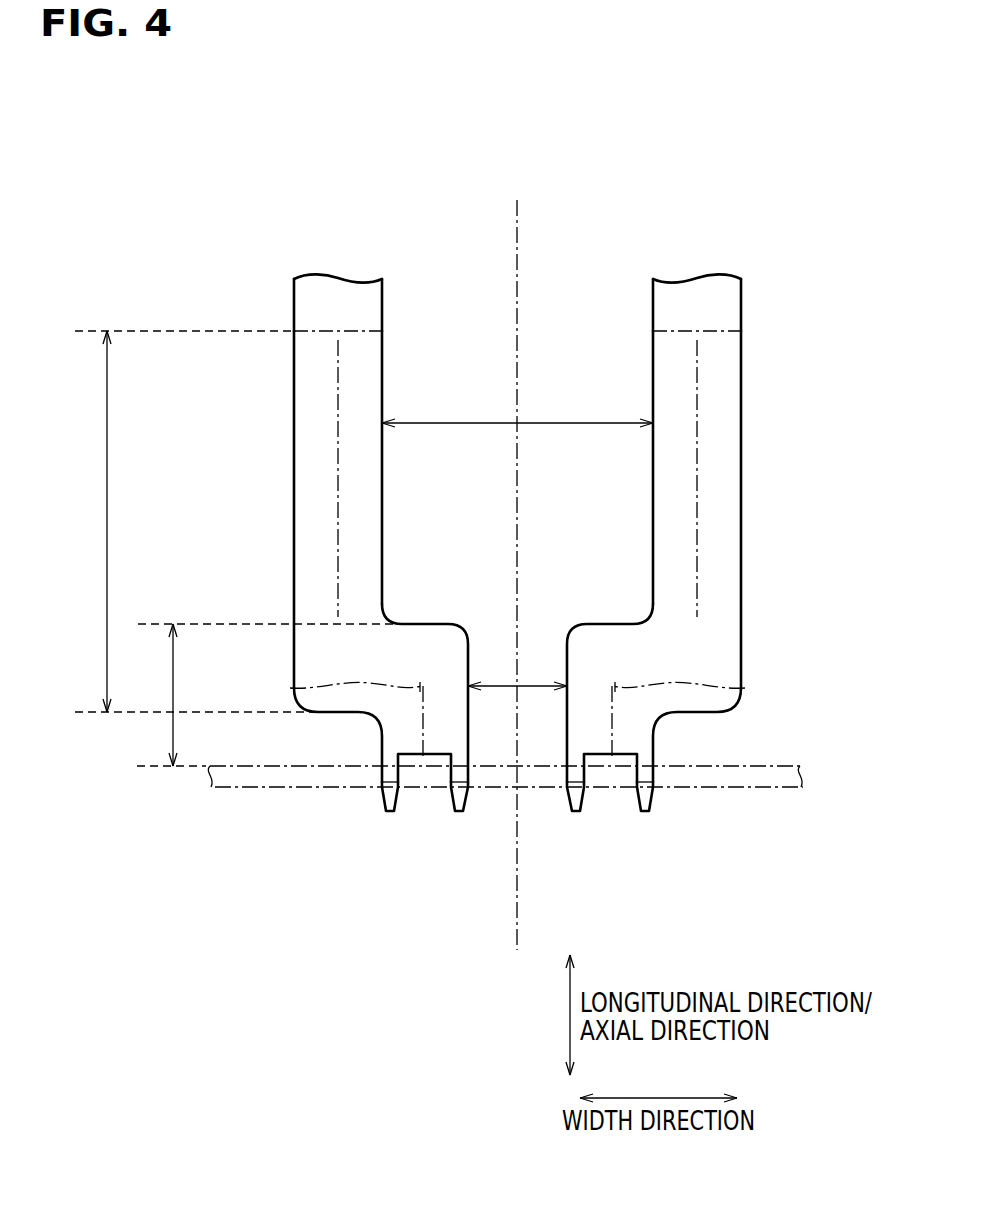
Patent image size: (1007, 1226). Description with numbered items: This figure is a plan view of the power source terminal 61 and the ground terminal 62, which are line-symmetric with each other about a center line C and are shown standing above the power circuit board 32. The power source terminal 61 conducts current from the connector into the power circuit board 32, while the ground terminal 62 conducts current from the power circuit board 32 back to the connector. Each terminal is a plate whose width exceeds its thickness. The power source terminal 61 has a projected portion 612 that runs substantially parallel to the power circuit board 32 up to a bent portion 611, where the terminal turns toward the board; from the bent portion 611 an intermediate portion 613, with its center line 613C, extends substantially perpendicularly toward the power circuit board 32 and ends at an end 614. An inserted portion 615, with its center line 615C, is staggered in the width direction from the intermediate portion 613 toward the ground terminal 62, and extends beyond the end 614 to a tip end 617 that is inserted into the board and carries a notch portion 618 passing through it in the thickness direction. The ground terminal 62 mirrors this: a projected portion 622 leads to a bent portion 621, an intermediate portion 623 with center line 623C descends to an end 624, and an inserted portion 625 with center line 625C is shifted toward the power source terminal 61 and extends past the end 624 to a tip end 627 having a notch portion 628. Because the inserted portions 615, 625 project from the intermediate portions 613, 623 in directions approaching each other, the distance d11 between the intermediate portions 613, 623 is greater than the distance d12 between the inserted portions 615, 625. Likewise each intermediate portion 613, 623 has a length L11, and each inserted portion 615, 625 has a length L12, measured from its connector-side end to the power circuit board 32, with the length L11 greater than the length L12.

The power source terminal 61 is at (708, 586).
The bent portion 611 is at (734, 333).
The projected portion 612 is at (751, 319).
The intermediate portion 613 is at (746, 509).
The center line 613C is at (699, 493).
The end 614 is at (696, 716).
The inserted portion 615 is at (691, 669).
The center line 615C is at (743, 688).
The tip end 617 is at (644, 814).
The notch portion 618 is at (590, 772).
The ground terminal 62 is at (332, 586).
The bent portion 621 is at (301, 333).
The projected portion 622 is at (284, 319).
The intermediate portion 623 is at (290, 509).
The center line 623C is at (336, 495).
The end 624 is at (334, 716).
The inserted portion 625 is at (345, 669).
The center line 625C is at (292, 688).
The tip end 627 is at (458, 814).
The notch portion 628 is at (402, 772).
The power circuit board 32 is at (748, 790).
The center line C is at (515, 212).
The distance d11 is at (460, 422).
The distance d12 is at (500, 685).
The length L11 is at (106, 475).
The length L12 is at (172, 735).